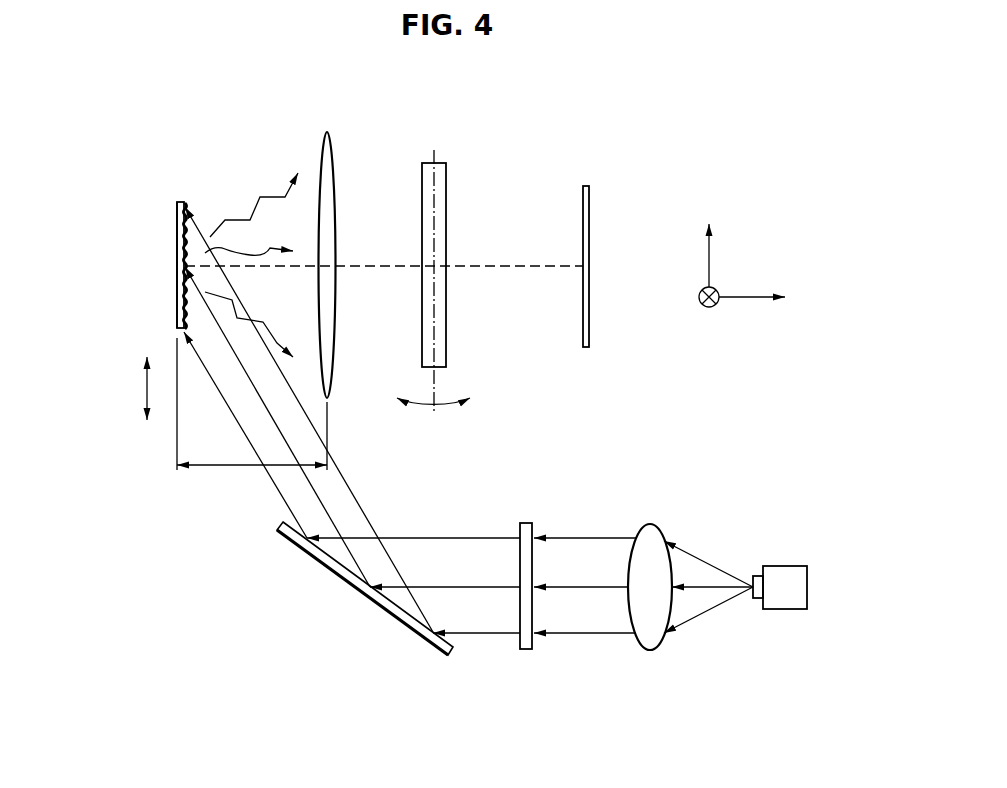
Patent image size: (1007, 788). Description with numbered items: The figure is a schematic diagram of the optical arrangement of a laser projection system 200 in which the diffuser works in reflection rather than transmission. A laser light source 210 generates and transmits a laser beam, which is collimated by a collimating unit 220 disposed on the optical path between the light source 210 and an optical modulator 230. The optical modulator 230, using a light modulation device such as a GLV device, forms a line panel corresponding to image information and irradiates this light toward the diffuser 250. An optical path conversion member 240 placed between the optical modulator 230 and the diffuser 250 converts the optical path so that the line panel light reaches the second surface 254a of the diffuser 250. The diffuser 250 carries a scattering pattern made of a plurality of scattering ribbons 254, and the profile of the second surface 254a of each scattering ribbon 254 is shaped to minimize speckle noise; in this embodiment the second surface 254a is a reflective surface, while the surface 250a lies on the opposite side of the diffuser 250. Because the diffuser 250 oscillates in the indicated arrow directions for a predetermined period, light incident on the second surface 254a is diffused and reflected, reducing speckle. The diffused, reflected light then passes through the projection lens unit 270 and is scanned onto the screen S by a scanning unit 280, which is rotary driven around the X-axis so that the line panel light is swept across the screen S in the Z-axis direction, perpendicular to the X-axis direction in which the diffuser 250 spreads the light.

The laser projection system 200 is at (692, 140).
The laser light source 210 is at (787, 567).
The collimating unit 220 is at (650, 528).
The optical modulator 230 is at (527, 524).
The optical path conversion member 240 is at (398, 613).
The diffuser 250 is at (177, 199).
The back surface of rotating mirror 250a is at (177, 307).
The scattering ribbons 254 is at (189, 209).
The second surface 254a is at (186, 203).
The projection lens unit 270 is at (328, 134).
The scanning unit 280 is at (430, 162).
The screen S is at (587, 185).